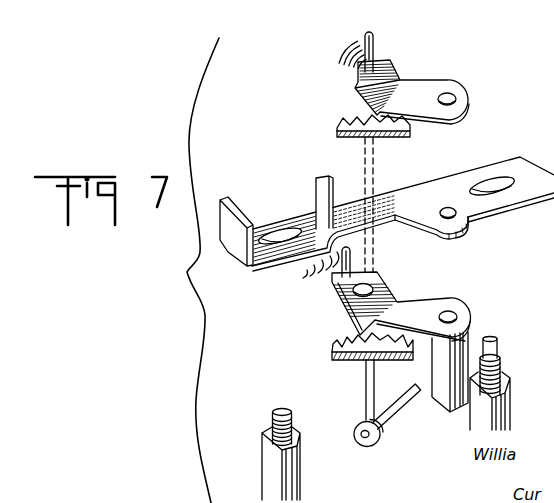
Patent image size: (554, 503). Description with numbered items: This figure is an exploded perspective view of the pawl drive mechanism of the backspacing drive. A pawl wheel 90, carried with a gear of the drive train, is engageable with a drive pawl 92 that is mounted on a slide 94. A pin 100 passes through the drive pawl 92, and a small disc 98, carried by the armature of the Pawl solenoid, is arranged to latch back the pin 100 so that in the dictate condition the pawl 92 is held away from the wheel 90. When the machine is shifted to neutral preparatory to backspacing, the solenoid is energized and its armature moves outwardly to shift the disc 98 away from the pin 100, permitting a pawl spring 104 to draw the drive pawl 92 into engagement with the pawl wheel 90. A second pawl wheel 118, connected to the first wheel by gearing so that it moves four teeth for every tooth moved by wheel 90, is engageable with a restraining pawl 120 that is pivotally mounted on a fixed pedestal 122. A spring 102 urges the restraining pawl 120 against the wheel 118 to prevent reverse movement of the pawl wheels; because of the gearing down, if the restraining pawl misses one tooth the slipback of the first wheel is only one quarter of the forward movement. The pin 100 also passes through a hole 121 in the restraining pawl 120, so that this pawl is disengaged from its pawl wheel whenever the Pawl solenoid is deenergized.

The pawl wheel 90 is at (342, 125).
The drive pawl 92 is at (422, 92).
The slide 94 is at (405, 197).
The disc 98 is at (365, 443).
The pin 100 is at (376, 57).
The spring 102 is at (304, 272).
The pawl spring 104 is at (358, 50).
The second pawl wheel 118 is at (333, 342).
The restraining pawl 120 is at (413, 307).
The hole 121 is at (355, 293).
The fixed pedestal 122 is at (445, 390).